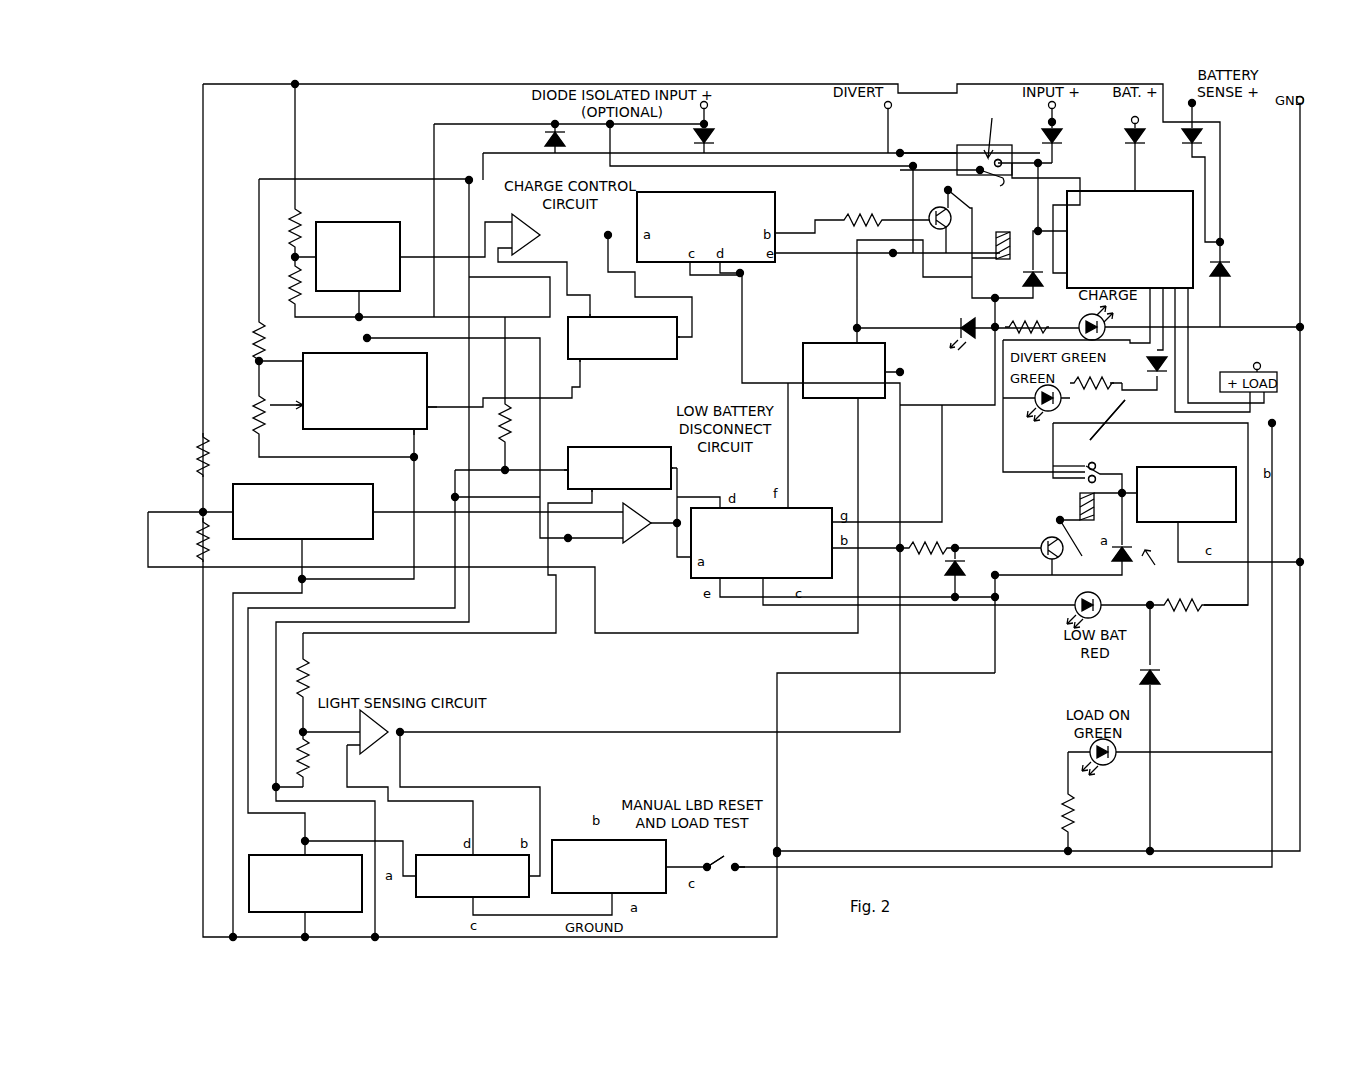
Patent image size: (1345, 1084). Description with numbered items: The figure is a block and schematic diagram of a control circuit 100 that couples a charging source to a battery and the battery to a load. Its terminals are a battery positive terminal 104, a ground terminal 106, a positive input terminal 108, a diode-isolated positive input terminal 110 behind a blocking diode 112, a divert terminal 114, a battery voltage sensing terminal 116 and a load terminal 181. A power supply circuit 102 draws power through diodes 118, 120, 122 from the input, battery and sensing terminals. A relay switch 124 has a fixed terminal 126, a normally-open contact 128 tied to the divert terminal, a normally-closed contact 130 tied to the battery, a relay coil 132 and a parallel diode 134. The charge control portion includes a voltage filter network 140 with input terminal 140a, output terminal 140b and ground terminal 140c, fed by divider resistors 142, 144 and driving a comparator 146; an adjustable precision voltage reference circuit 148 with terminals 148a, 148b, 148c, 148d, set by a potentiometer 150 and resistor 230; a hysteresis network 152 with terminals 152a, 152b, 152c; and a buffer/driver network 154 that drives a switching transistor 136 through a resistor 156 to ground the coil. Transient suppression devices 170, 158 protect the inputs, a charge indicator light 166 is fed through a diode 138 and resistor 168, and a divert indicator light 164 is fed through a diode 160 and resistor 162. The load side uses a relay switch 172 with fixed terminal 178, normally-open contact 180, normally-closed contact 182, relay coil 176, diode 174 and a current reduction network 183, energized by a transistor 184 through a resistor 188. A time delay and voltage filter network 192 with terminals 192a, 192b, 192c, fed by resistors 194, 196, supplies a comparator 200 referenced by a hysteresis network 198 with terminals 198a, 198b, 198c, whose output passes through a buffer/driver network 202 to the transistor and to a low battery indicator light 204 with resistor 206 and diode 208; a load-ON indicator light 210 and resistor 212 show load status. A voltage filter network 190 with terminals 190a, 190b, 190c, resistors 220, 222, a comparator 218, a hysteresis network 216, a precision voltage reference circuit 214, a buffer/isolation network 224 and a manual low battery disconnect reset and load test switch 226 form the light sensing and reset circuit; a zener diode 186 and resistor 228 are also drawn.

The control circuit 100 is at (950, 87).
The power supply circuit 102 is at (1128, 188).
The battery positive terminal 104 is at (1135, 124).
The ground terminal 106 is at (1300, 105).
The positive input terminal 108 is at (1056, 109).
The diode-isolated positive input terminal 110 is at (708, 109).
The blocking diode 112 is at (714, 135).
The divert terminal 114 is at (892, 109).
The battery voltage sensing terminal 116 is at (1192, 116).
The diode 118 is at (1062, 137).
The diode 120 is at (1145, 137).
The diode 122 is at (1187, 158).
The relay switch 124 is at (999, 128).
The fixed terminal 126 is at (980, 168).
The normally-open contact 128 is at (1000, 160).
The normally-closed contact 130 is at (1000, 182).
The relay coil 132 is at (1002, 260).
The diode 134 is at (1030, 277).
The switching transistor 136 is at (946, 236).
The diode 138 is at (974, 341).
The voltage filter network 140 is at (362, 215).
The input terminal 140a is at (316, 257).
The output terminal 140b is at (400, 257).
The ground terminal 140c is at (359, 291).
The resistor 142 is at (288, 219).
The resistor 144 is at (295, 289).
The comparator 146 is at (518, 217).
The adjustable precision voltage reference circuit 148 is at (418, 425).
The terminal 148a is at (302, 405).
The terminal 148b is at (427, 407).
The ground terminal 148c is at (410, 431).
The terminal 148d is at (367, 338).
The potentiometer 150 is at (253, 422).
The hysteresis network 152 is at (677, 350).
The input terminal 152a is at (565, 358).
The terminal 152b is at (684, 336).
The output terminal 152c is at (614, 316).
The buffer/driver network 154 is at (683, 193).
The resistor 156 is at (872, 218).
The second transient suppression device 158 is at (1230, 268).
The diode 160 is at (1153, 376).
The resistor 162 is at (1128, 425).
The divert indicator light 164 is at (1062, 407).
The charge indicator light 166 is at (1106, 332).
The resistor 168 is at (1045, 312).
The first transient suppression device 170 is at (551, 134).
The relay switch 172 is at (1166, 570).
The diode 174 is at (1130, 557).
The relay coil 176 is at (1080, 516).
The fixed terminal 178 is at (1082, 468).
The normally-open contact 180 is at (1094, 456).
The load terminal 181 is at (1258, 366).
The normally-closed contact 182 is at (1109, 484).
The current reduction network 183 is at (1236, 510).
The transistor 184 is at (1053, 560).
The zener diode 186 is at (954, 572).
The resistor 188 is at (939, 542).
The voltage filter network 190 is at (902, 370).
The terminal 190a is at (855, 344).
The ground terminal 190b is at (888, 374).
The terminal 190c is at (855, 398).
The time delay and voltage filter network 192 is at (338, 487).
The input terminal 192a is at (230, 520).
The output terminal 192b is at (373, 512).
The ground terminal 192c is at (304, 539).
The resistor 194 is at (194, 470).
The resistor 196 is at (203, 554).
The hysteresis network 198 is at (612, 446).
The input reference voltage terminal 198a is at (562, 470).
The terminal 198b is at (676, 472).
The output terminal 198c is at (590, 494).
The comparator 200 is at (643, 527).
The buffer/driver network 202 is at (694, 572).
The low battery indicator light 204 is at (1074, 610).
The resistor 206 is at (1179, 610).
The diode 208 is at (1158, 686).
The load-ON indicator light 210 is at (1107, 764).
The resistor 212 is at (1073, 821).
The precision voltage reference circuit 214 is at (266, 855).
The hysteresis network 216 is at (435, 899).
The comparator 218 is at (384, 720).
The resistor 220 is at (308, 670).
The resistor 222 is at (308, 742).
The buffer/isolation network 224 is at (667, 893).
The manual low battery disconnect reset and load test switch 226 is at (724, 867).
The resistor 228 is at (530, 433).
The resistor 230 is at (253, 334).